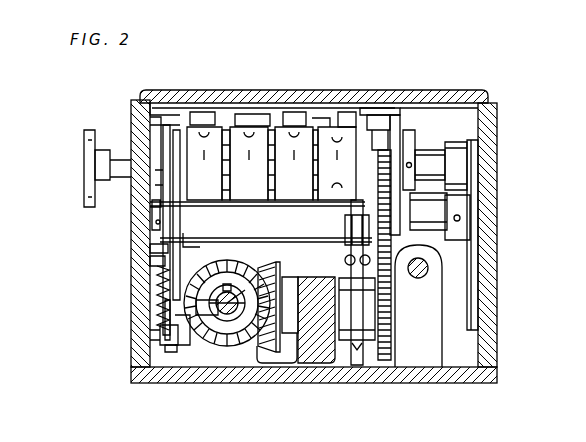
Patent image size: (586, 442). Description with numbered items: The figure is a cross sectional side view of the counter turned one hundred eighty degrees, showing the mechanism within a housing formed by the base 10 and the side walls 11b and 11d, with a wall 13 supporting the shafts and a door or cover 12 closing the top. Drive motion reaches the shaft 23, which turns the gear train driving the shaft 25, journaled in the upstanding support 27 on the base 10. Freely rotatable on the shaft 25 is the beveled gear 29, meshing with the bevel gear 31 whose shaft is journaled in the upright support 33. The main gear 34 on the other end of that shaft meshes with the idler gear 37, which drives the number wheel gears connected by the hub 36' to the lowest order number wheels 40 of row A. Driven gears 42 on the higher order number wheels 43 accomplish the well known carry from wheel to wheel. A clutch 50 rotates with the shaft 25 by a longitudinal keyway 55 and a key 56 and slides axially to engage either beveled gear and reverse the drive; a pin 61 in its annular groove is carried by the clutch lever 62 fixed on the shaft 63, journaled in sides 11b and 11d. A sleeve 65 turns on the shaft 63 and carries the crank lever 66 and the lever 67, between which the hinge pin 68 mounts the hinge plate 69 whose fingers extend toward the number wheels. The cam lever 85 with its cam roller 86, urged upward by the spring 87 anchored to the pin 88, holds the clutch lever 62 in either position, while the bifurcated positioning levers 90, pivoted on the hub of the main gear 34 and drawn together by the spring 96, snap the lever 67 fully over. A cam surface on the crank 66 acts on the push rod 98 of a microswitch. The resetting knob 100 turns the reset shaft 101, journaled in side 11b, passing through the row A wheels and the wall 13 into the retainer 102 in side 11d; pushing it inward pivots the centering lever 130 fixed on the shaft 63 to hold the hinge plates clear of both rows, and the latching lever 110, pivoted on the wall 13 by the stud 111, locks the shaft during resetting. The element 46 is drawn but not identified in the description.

The base 10 is at (140, 377).
The side wall 11b is at (133, 197).
The side wall 11d is at (488, 200).
The cover 12 is at (150, 96).
The wall 13 is at (402, 130).
The shaft 23 is at (421, 279).
The shaft 25 is at (215, 335).
The upstanding support 27 is at (233, 356).
The beveled gear 29 is at (190, 352).
The bevel gear 31 is at (276, 366).
The upright support 33 is at (312, 360).
The main gear 34 is at (386, 364).
The hub 36' is at (429, 151).
The idler gear 37 is at (395, 214).
The first number wheels 40 is at (333, 132).
The driven gears 42 is at (305, 120).
The number wheels 43 is at (283, 116).
The counter wheel shaft 46 is at (328, 194).
The clutch 50 is at (230, 345).
The longitudinal keyway 55 is at (268, 270).
The key 56 is at (227, 292).
The pin 61 is at (160, 298).
The clutch lever 62 is at (150, 262).
The shaft 63 is at (140, 222).
The sleeve 65 is at (226, 243).
The crank lever 66 is at (142, 104).
The lever 67 is at (370, 108).
The hinge pin 68 is at (248, 114).
The hinge plate 69 is at (186, 108).
The cam lever 85 is at (158, 333).
The cam roller 86 is at (170, 348).
The spring 87 is at (155, 278).
The pin 88 is at (150, 248).
The bifurcated positioning levers 90 is at (357, 321).
The spring 96 is at (345, 261).
The push rod 98 is at (355, 223).
The resetting knob 100 is at (86, 136).
The reset shaft 101 is at (98, 165).
The retainer 102 is at (462, 145).
The latching lever 110 is at (382, 120).
The stud 111 is at (397, 125).
The centering lever 130 is at (470, 178).
The row A is at (330, 125).